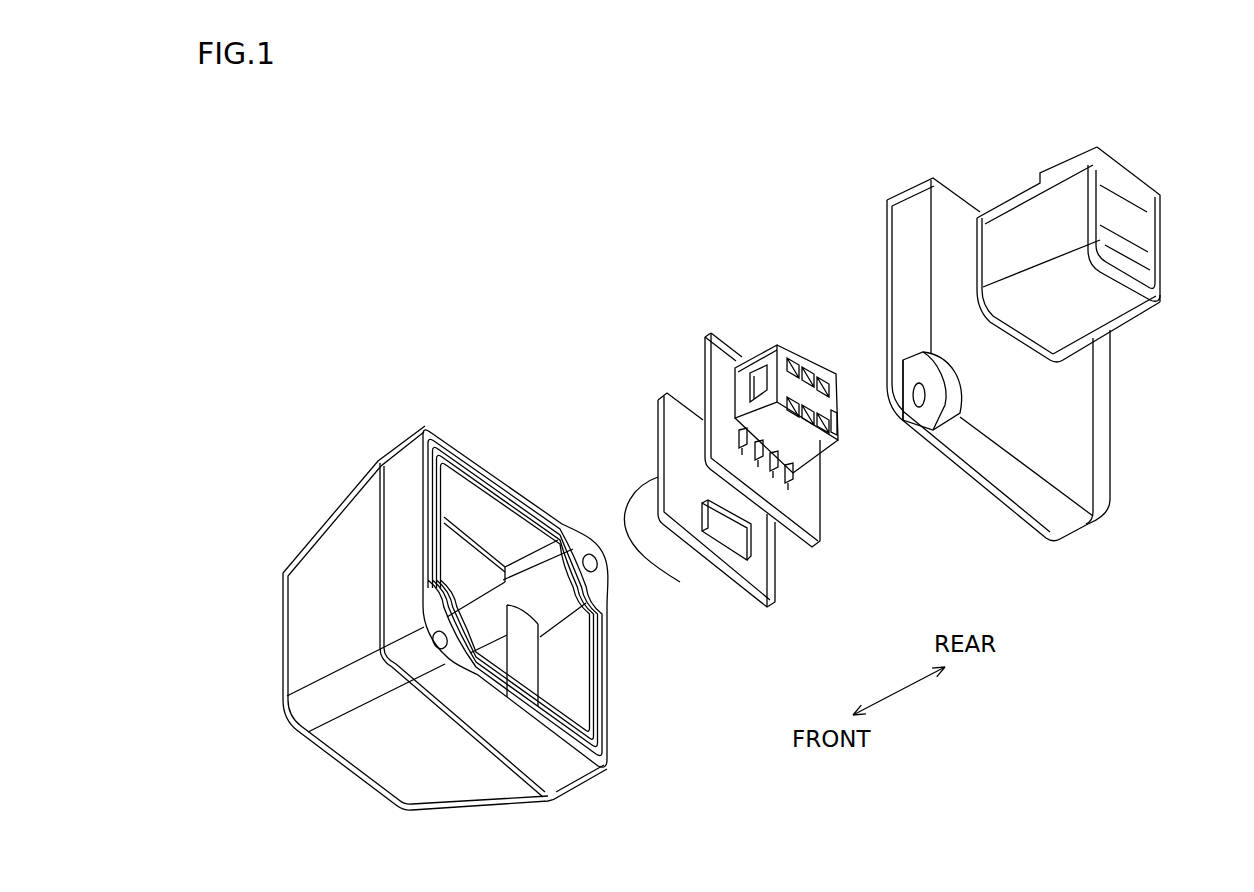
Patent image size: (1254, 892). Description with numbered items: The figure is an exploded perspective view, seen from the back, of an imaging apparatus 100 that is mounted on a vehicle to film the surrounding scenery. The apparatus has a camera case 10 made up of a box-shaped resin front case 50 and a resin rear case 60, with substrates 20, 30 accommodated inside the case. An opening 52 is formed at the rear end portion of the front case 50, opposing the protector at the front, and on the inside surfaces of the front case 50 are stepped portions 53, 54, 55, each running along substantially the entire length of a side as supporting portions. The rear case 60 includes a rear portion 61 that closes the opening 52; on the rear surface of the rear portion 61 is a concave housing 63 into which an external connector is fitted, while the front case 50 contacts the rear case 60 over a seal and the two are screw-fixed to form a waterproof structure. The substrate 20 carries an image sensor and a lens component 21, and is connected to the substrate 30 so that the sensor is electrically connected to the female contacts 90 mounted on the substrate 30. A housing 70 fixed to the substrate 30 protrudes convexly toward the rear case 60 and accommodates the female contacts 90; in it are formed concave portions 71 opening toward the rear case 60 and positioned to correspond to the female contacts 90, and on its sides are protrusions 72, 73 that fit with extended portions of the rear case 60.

The imaging apparatus 100 is at (650, 124).
The camera case 10 is at (568, 215).
The front case 50 is at (409, 413).
The opening 52 is at (515, 522).
The stepped portion 53 is at (476, 558).
The stepped portion 54 is at (528, 657).
The stepped portion 55 is at (497, 680).
The rear case 60 is at (857, 238).
The rear portion 61 is at (1093, 473).
The concave housing 63 is at (1110, 307).
The substrate 20 is at (763, 573).
The lens component 21 is at (663, 553).
The substrate 30 is at (807, 512).
The housing 70 is at (760, 350).
The concave portions 71 is at (797, 358).
The protrusion 72 is at (758, 372).
The protrusion 73 is at (837, 430).
The female contacts 90 is at (758, 455).